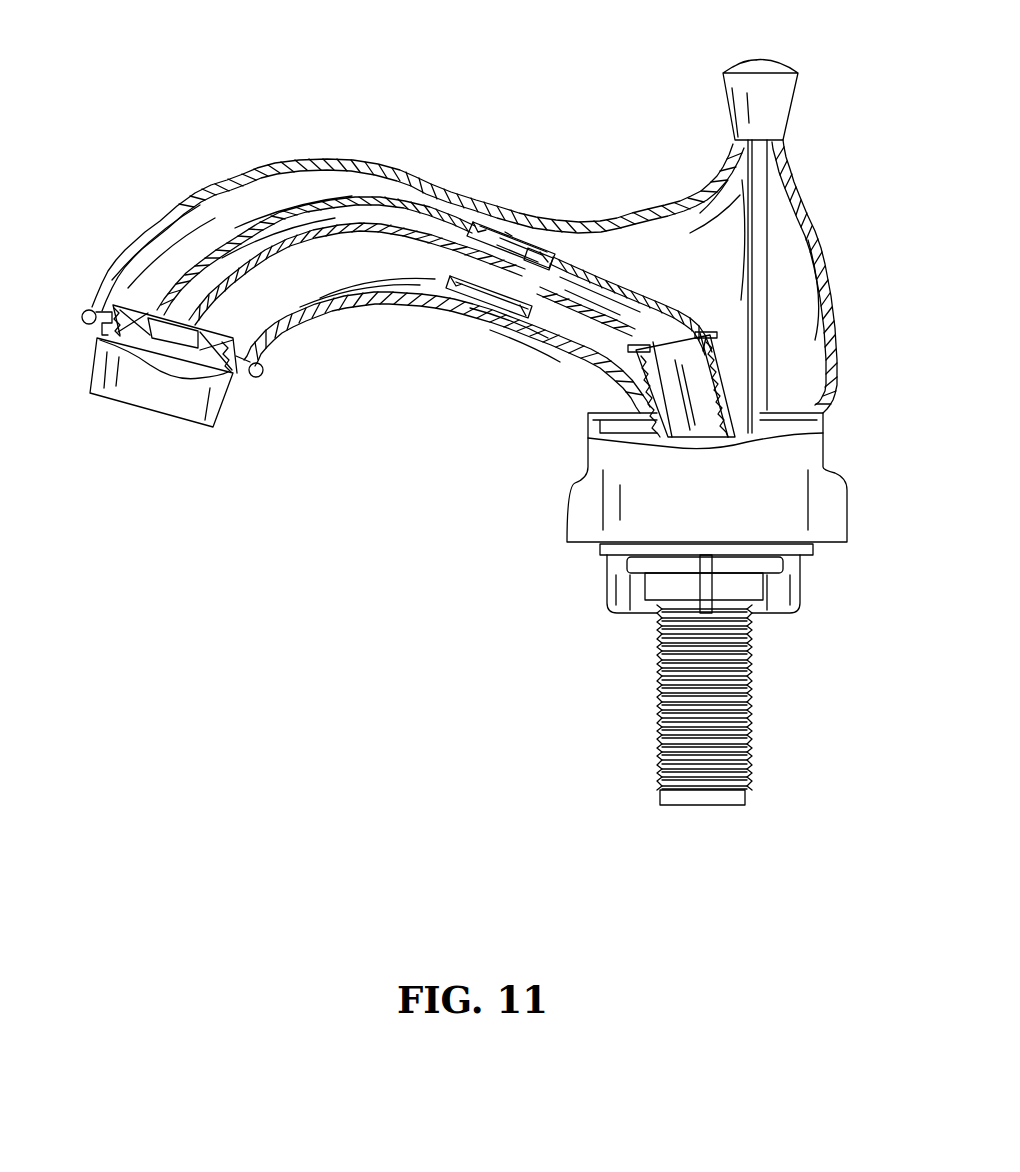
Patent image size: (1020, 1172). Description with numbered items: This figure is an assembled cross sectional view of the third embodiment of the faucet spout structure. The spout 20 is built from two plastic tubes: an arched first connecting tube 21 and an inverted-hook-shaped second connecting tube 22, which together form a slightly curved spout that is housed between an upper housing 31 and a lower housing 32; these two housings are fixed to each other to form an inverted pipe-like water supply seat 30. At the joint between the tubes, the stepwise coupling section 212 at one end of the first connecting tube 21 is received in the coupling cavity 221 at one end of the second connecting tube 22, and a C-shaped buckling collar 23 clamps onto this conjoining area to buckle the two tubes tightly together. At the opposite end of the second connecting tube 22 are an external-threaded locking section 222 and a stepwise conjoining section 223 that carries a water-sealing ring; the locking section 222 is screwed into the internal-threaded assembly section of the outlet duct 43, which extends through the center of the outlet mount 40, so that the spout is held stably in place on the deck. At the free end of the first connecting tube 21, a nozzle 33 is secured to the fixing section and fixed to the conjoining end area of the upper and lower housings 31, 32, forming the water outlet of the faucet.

The water supply seat 30 is at (459, 218).
The upper housing 31 is at (343, 160).
The lower housing 32 is at (363, 307).
The spout 20 is at (431, 266).
The first connecting tube 21 is at (272, 203).
The second connecting tube 22 is at (621, 335).
The buckling collar 23 is at (500, 232).
The coupling cavity 221 is at (517, 240).
The coupling section 212 is at (537, 250).
The external-threaded locking section 222 is at (640, 363).
The conjoining section 223 is at (640, 404).
The nozzle 33 is at (96, 360).
The outlet duct 43 is at (727, 387).
The outlet mount 40 is at (850, 394).